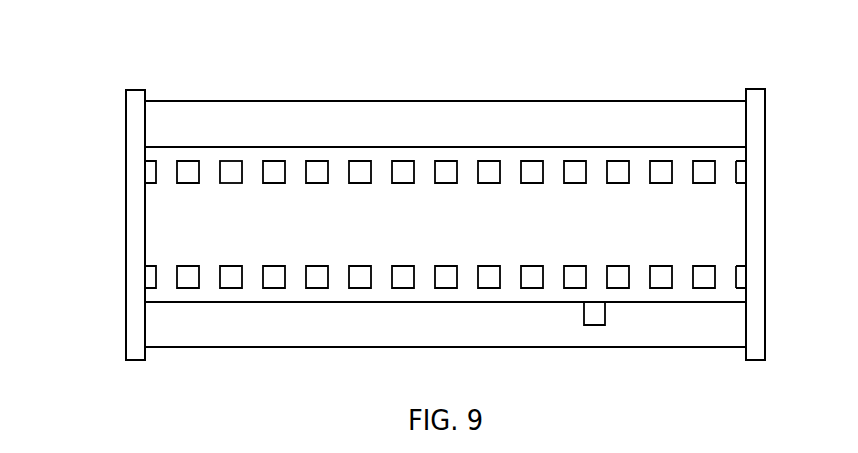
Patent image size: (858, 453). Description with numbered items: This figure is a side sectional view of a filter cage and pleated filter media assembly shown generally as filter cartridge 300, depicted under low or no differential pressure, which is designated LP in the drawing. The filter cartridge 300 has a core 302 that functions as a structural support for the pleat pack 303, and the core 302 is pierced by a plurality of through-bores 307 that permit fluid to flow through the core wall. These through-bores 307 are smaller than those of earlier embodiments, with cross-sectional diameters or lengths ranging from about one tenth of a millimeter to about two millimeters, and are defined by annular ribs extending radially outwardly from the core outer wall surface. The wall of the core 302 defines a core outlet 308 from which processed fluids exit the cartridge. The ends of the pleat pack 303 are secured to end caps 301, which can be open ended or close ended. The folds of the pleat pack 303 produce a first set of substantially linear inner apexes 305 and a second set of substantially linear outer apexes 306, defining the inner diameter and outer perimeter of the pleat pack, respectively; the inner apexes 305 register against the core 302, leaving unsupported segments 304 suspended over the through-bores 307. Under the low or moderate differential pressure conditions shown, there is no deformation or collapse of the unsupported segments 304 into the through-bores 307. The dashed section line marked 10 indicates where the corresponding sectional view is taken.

The filter cartridge 300 is at (446, 214).
The end caps 301 is at (126, 165).
The core 302 is at (228, 168).
The pleat pack 303 is at (463, 95).
The unsupported segments 304 is at (594, 326).
The first set of inner apexes 305 is at (224, 147).
The second set of outer apexes 306 is at (652, 101).
The through-bores 307 is at (445, 224).
The core outlet 308 is at (583, 230).
The low differential pressure LP is at (372, 93).
The section line for FIG. 10 is at (486, 122).